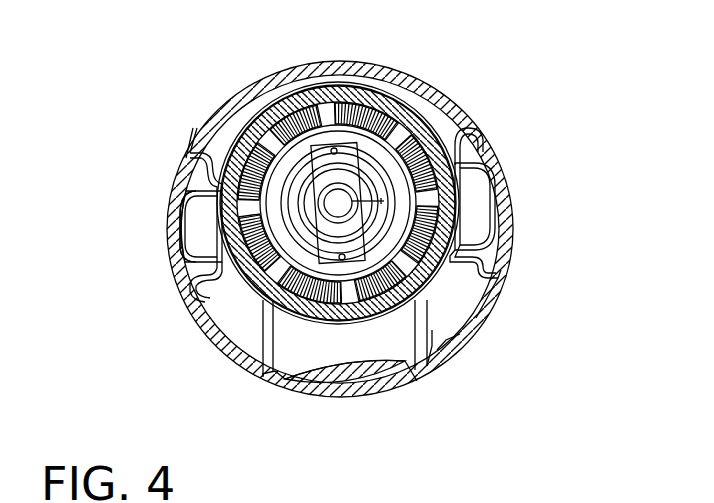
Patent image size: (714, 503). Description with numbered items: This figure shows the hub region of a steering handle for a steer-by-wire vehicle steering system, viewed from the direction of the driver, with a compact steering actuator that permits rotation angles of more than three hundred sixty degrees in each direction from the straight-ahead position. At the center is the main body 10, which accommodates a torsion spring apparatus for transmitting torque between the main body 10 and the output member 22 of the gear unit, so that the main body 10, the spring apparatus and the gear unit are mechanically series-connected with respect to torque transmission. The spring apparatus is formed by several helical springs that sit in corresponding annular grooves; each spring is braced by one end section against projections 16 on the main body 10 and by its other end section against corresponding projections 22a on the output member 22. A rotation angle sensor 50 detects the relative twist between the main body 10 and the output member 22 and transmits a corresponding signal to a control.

The main body 10 is at (437, 344).
The projections on the main body 16 is at (331, 117).
The output member 22 is at (286, 152).
The projections on the output member 22a is at (252, 207).
The rotation angle sensor 50 is at (346, 237).